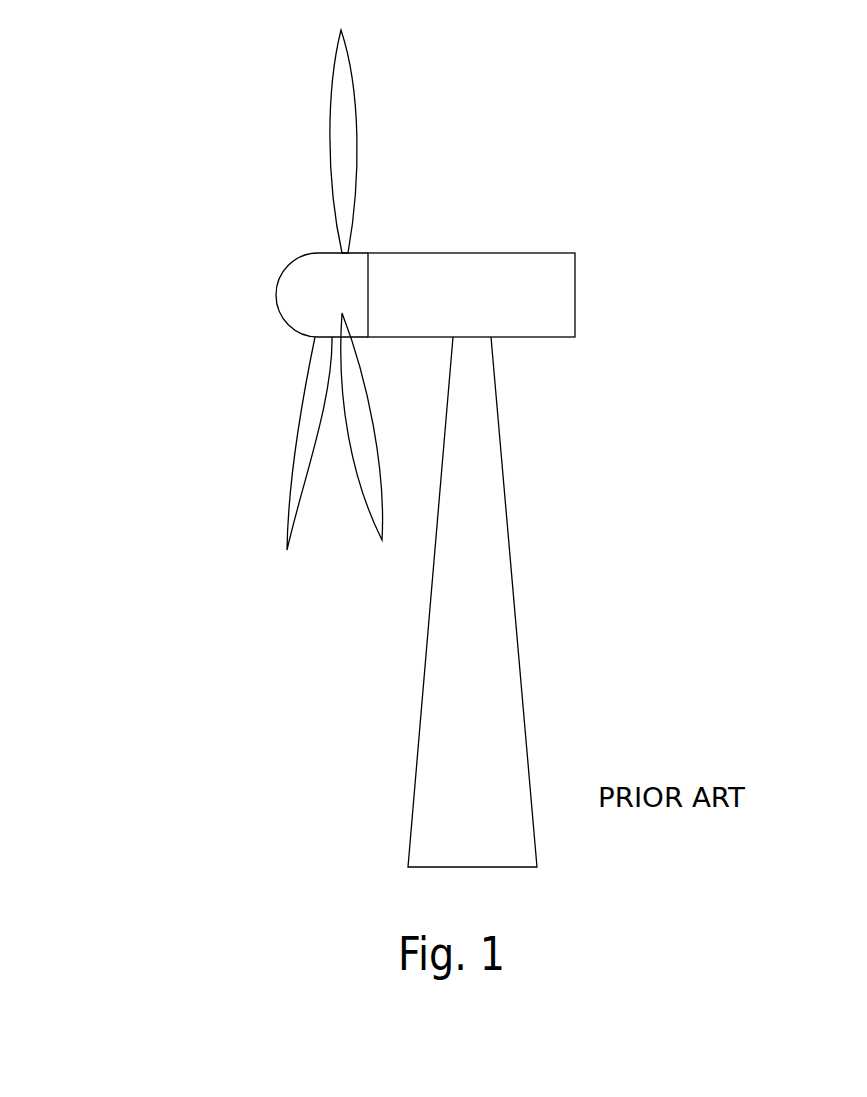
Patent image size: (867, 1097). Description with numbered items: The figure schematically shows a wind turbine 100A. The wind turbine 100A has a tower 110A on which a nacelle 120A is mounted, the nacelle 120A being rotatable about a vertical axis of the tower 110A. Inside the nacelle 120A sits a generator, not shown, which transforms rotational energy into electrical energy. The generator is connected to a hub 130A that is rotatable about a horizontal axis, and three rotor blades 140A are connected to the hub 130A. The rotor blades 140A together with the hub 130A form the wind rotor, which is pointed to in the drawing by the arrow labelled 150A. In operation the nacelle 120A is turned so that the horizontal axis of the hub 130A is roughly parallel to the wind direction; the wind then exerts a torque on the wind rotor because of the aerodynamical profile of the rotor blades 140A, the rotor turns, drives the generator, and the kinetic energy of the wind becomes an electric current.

The wind turbine 100A is at (785, 83).
The tower 110A is at (517, 633).
The nacelle 120A is at (576, 281).
The hub 130A is at (345, 276).
The rotor blade 140A is at (338, 140).
The rotor 150A is at (238, 297).